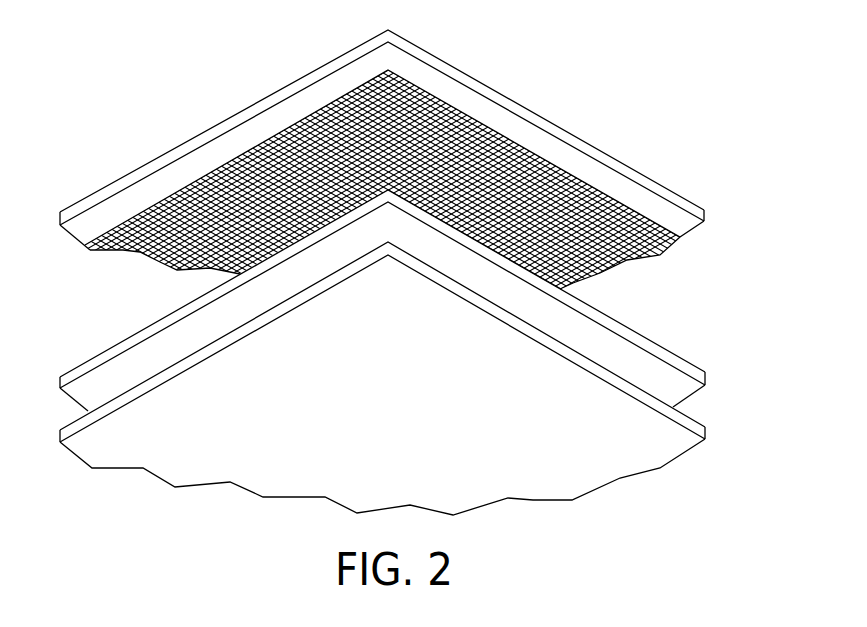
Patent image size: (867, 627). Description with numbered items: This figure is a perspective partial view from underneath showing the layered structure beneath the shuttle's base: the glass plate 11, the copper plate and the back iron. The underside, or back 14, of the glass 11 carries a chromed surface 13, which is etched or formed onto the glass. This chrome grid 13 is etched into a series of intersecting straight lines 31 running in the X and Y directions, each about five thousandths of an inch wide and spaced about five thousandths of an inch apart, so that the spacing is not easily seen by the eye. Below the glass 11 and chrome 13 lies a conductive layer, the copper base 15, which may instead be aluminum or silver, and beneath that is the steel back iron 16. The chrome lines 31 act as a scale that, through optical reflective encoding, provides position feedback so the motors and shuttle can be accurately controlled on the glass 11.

The glass plate 11 is at (667, 188).
The chromed surface 13 is at (688, 233).
The back of the glass 14 is at (512, 127).
The copper base 15 is at (83, 362).
The steel back iron 16 is at (403, 433).
The intersecting straight lines 31 is at (128, 251).